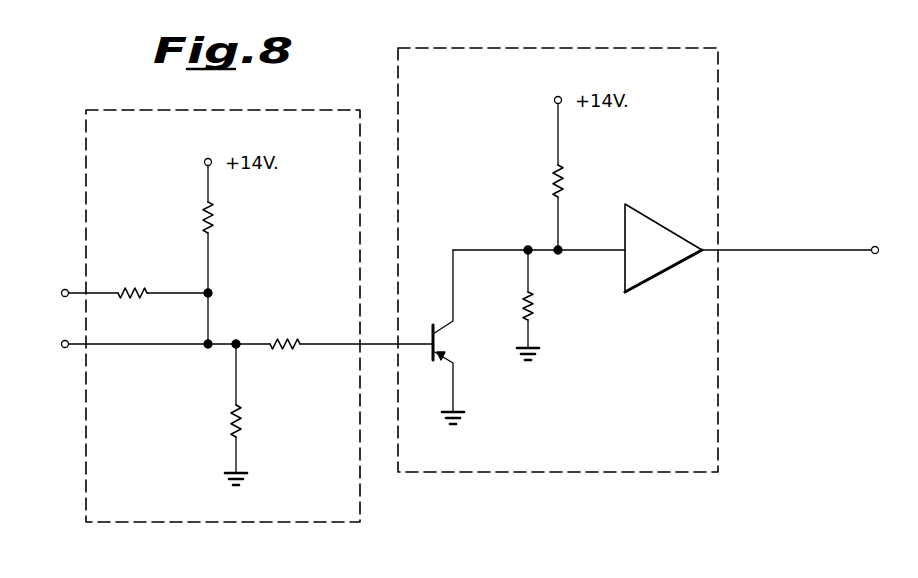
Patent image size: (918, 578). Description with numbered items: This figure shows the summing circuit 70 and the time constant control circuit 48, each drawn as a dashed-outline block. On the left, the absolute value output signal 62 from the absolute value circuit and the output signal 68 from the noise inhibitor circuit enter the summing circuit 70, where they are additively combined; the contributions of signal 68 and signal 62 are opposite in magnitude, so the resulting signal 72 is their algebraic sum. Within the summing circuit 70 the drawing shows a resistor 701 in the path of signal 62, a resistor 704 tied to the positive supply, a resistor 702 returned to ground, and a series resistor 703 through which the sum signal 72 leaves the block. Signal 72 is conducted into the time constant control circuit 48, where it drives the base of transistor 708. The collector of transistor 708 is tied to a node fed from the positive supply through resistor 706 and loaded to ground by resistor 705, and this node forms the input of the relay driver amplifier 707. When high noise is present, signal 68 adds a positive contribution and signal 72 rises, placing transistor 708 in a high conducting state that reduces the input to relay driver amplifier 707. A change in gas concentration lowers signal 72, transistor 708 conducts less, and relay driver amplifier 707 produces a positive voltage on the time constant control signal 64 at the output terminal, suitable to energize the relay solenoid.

The time constant control circuit 48 is at (717, 415).
The absolute value output signal 62 is at (77, 277).
The time constant control signal 64 is at (852, 255).
The noise inhibitor output signal 68 is at (82, 347).
The summing circuit 70 is at (358, 462).
The sum signal 72 is at (396, 357).
The resistor 701 is at (157, 272).
The resistor 702 is at (240, 438).
The resistor 703 is at (289, 331).
The resistor 704 is at (238, 227).
The resistor 705 is at (532, 320).
The resistor 706 is at (552, 192).
The relay driver amplifier 707 is at (677, 309).
The transistor 708 is at (440, 344).